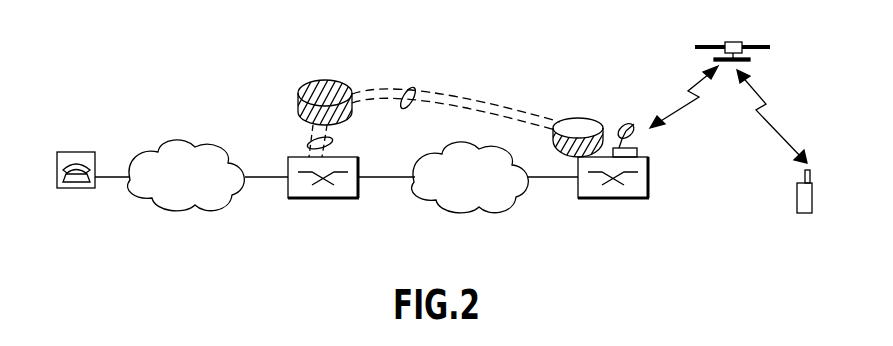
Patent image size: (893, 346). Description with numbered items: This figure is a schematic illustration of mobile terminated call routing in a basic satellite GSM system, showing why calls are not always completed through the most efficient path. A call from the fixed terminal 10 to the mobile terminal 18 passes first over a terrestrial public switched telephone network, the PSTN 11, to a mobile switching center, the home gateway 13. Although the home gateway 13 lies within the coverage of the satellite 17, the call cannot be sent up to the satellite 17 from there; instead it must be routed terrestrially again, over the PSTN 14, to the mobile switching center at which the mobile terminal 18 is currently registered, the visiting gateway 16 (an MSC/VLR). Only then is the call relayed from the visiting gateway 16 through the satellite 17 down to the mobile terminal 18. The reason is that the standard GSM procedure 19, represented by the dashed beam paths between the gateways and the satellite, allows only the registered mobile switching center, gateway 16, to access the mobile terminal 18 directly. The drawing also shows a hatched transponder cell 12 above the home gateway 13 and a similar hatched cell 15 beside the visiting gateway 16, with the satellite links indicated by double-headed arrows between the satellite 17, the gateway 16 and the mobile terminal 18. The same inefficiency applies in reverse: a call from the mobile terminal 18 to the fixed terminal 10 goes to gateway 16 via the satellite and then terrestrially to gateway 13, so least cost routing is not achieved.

The fixed terminal 10 is at (93, 189).
The PSTN 11 is at (157, 148).
The satellite transponder cell 12 is at (300, 118).
The home gateway 13 is at (350, 199).
The PSTN 14 is at (490, 203).
The satellite transponder cell 15 is at (603, 124).
The visiting gateway 16 is at (644, 199).
The satellite 17 is at (731, 42).
The mobile terminal 18 is at (800, 214).
The standard GSM procedure 19 is at (403, 107).